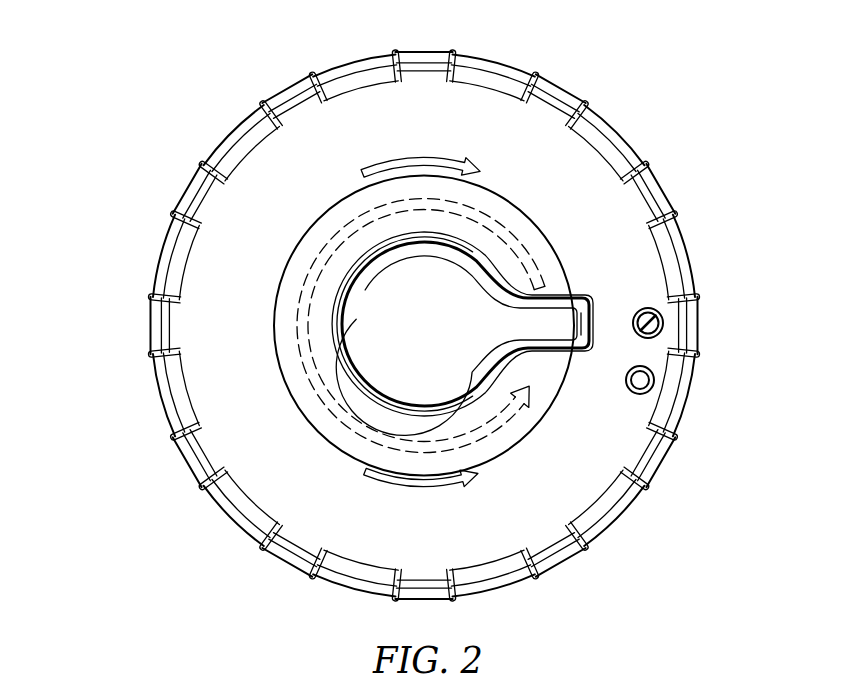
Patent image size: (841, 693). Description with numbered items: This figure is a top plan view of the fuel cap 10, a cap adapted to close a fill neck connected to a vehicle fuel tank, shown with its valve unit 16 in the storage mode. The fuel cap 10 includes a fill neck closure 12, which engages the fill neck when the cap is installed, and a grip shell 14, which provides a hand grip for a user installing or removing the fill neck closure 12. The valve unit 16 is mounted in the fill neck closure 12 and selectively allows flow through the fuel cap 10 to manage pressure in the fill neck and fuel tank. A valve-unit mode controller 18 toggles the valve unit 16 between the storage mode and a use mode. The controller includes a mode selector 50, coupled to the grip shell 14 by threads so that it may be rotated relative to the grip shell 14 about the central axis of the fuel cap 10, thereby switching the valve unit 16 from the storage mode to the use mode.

The fuel cap 10 is at (680, 87).
The fill neck closure 12 is at (170, 428).
The grip shell 14 is at (679, 226).
The valve unit 16 is at (304, 442).
The valve-unit mode controller 18 is at (342, 256).
The mode selector 50 is at (378, 310).